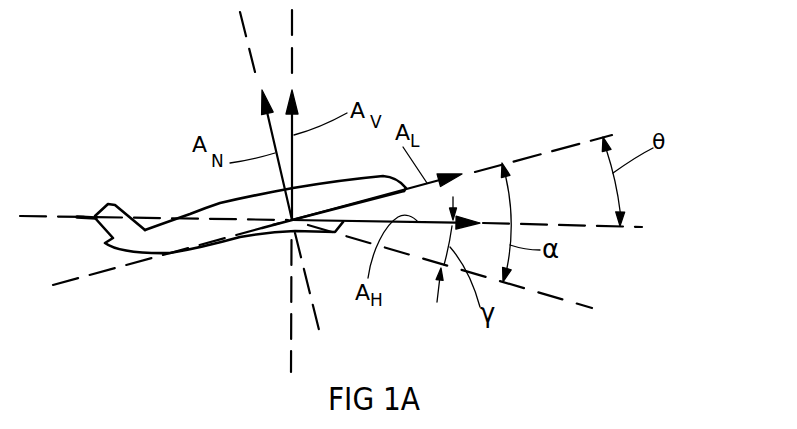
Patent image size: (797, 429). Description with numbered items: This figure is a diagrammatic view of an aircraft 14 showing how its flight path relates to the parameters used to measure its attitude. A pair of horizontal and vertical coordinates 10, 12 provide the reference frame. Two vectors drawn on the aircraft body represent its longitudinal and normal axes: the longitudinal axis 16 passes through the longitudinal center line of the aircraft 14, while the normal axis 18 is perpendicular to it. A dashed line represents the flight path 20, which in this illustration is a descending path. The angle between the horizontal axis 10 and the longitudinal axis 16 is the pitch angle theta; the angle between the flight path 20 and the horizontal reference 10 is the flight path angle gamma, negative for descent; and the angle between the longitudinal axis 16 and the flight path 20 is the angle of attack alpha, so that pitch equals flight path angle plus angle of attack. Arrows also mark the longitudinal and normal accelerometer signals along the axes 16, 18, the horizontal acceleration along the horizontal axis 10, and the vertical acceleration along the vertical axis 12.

The horizontal coordinate 10 is at (626, 228).
The vertical coordinate 12 is at (294, 23).
The aircraft 14 is at (132, 240).
The longitudinal axis vector 16 is at (447, 172).
The normal axis vector 18 is at (258, 108).
The flight path 20 is at (580, 310).